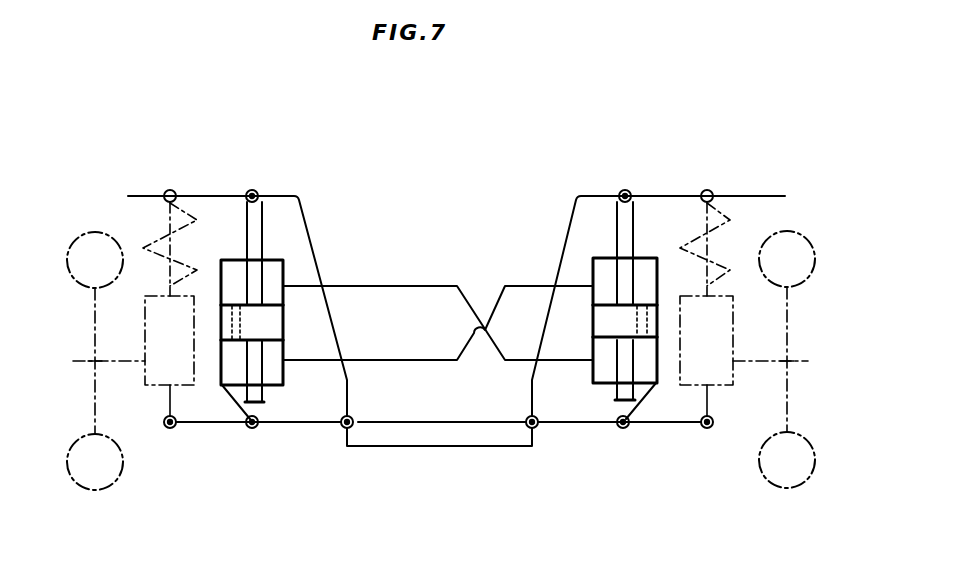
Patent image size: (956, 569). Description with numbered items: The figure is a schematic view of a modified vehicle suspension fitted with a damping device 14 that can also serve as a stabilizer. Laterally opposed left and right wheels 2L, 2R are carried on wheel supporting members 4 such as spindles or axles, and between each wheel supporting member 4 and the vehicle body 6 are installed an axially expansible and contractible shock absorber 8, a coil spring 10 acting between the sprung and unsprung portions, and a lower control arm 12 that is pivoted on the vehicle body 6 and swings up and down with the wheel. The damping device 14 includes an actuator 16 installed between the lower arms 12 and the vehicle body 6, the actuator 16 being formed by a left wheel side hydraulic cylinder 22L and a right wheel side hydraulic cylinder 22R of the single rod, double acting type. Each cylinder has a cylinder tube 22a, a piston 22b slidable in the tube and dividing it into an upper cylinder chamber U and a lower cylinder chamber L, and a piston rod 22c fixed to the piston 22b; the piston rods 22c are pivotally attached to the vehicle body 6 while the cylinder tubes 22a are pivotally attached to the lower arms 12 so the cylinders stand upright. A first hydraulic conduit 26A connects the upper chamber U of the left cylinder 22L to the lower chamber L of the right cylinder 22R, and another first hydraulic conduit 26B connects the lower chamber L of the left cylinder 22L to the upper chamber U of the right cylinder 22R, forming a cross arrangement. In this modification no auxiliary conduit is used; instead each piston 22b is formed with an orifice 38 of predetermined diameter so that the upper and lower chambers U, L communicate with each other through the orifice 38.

The left wheel 2L is at (77, 290).
The right wheel 2R is at (770, 490).
The wheel supporting member 4 is at (83, 363).
The vehicle body 6 is at (440, 447).
The shock absorber 8 is at (145, 308).
The coil spring 10 is at (147, 248).
The lower control arm 12 is at (222, 428).
The damping device 14 is at (350, 118).
The actuator 16 is at (438, 277).
The left wheel side hydraulic cylinder 22L is at (436, 342).
The right wheel side hydraulic cylinder 22R is at (583, 380).
The cylinder tube 22a is at (439, 394).
The piston 22b is at (284, 318).
The piston rod 22c is at (248, 242).
The first hydraulic conduit 26A is at (412, 288).
The first hydraulic conduit 26B is at (423, 362).
The orifice 38 is at (237, 327).
The upper cylinder chamber U is at (273, 268).
The lower cylinder chamber L is at (227, 364).